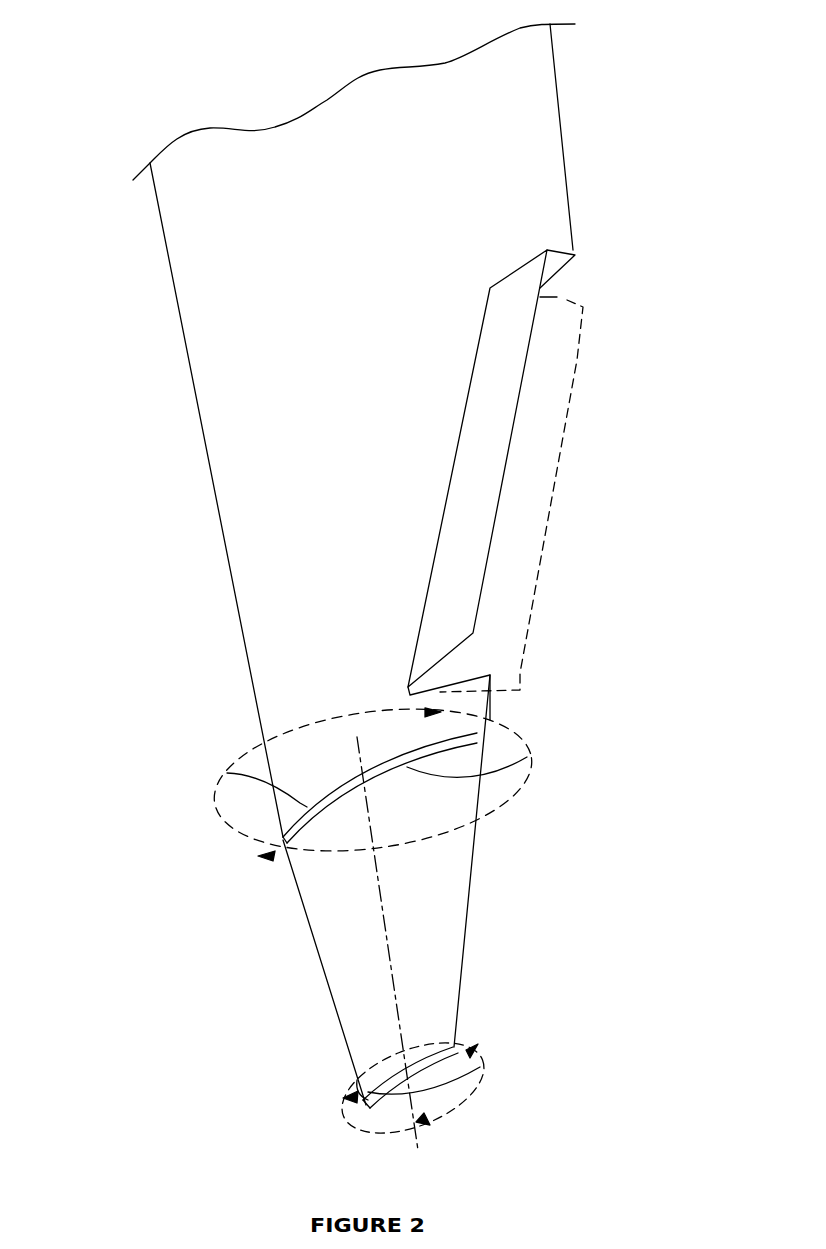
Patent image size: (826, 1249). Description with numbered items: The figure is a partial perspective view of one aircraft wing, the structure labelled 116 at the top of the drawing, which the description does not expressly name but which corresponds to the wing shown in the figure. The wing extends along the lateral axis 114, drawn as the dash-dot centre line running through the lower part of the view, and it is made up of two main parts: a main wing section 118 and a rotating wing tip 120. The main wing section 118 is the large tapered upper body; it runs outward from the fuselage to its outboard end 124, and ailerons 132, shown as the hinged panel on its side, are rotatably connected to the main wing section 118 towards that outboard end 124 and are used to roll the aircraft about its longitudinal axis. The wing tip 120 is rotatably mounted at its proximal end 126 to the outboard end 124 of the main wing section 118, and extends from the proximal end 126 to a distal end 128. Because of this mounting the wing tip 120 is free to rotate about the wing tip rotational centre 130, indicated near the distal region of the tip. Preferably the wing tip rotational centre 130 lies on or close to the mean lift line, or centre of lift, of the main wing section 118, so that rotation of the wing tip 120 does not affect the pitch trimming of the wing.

The lateral axis 114 is at (410, 958).
The sleeve assembly 116 is at (716, 33).
The main wing section 118 is at (247, 373).
The rotating wing tip 120 is at (417, 897).
The outboard end 124 is at (239, 779).
The proximal end 126 is at (498, 809).
The distal end 128 is at (363, 1083).
The wing tip rotational centre 130 is at (480, 1072).
The ailerons 132 is at (507, 358).